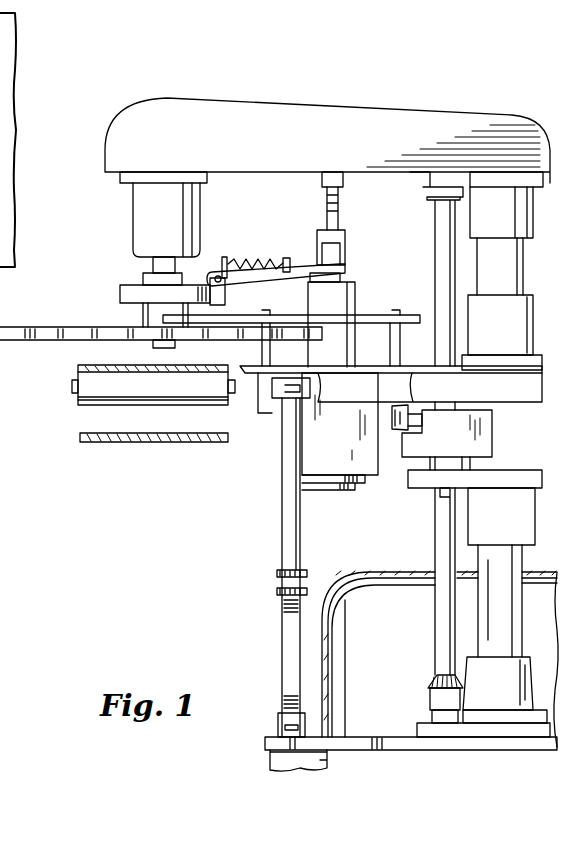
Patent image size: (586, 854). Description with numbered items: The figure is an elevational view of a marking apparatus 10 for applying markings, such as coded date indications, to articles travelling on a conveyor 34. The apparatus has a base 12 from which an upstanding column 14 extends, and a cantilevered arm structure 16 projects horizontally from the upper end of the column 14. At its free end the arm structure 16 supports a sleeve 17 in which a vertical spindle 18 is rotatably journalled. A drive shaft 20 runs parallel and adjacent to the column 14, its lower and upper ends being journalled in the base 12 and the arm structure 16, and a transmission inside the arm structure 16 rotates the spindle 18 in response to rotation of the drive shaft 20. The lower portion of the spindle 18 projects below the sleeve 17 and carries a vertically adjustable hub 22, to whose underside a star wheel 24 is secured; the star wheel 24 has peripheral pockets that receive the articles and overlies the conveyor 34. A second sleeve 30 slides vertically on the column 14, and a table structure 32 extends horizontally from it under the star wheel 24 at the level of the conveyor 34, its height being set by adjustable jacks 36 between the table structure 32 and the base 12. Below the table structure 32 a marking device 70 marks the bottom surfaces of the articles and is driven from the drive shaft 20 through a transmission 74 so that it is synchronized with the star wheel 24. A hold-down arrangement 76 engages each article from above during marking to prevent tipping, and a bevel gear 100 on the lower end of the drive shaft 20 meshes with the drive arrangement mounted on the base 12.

The marking apparatus 10 is at (440, 65).
The base 12 is at (363, 742).
The column 14 is at (512, 618).
The cantilevered arm structure 16 is at (282, 108).
The sleeve 17 is at (185, 205).
The spindle 18 is at (153, 265).
The drive shaft 20 is at (435, 537).
The hub 22 is at (130, 322).
The star wheel 24 is at (38, 327).
The sleeve 30 is at (528, 328).
The table structure 32 is at (420, 380).
The conveyor 34 is at (88, 365).
The adjustable jacks 36 is at (287, 545).
The marking device 70 is at (315, 455).
The transmission 74 is at (458, 426).
The hold-down arrangement 76 is at (306, 241).
The bevel gear 100 is at (428, 680).